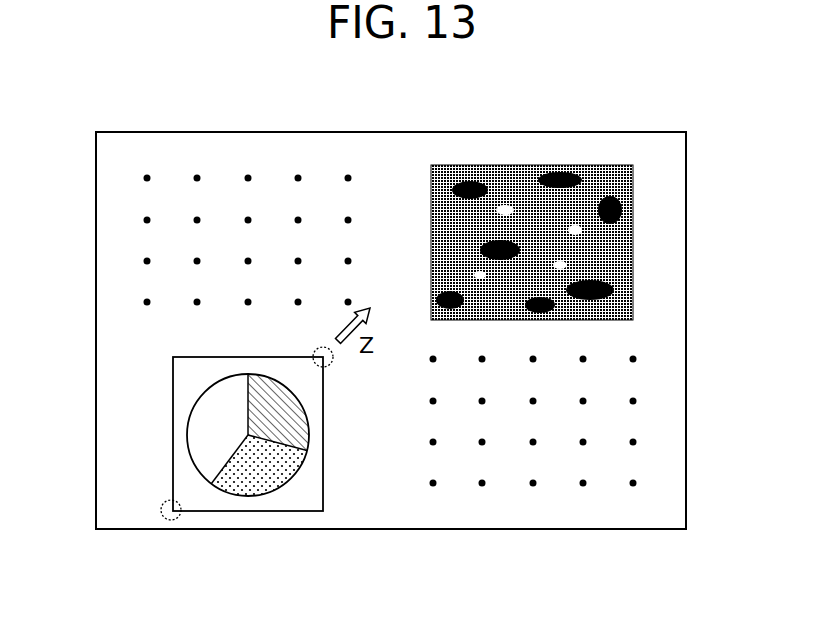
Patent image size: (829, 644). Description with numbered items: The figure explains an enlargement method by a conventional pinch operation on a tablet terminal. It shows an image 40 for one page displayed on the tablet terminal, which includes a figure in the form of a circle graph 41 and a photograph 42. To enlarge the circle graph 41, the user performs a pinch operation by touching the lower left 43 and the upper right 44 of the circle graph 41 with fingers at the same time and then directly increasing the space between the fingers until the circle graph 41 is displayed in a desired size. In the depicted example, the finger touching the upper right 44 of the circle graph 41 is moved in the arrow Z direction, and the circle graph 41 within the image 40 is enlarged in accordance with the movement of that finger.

The image 40 is at (568, 132).
The figure (circle graph) 41 is at (172, 450).
The photograph 42 is at (632, 237).
The lower left 43 is at (180, 518).
The upper right 44 is at (331, 366).